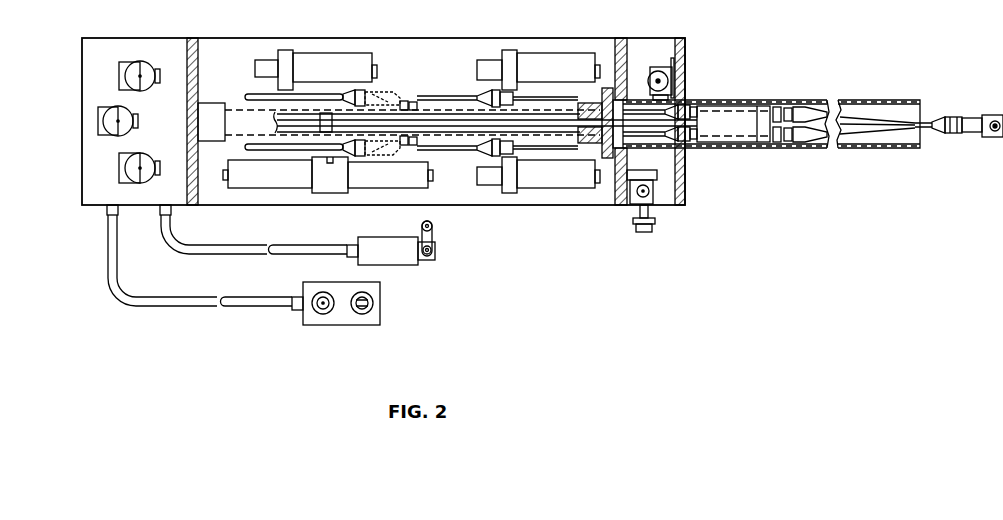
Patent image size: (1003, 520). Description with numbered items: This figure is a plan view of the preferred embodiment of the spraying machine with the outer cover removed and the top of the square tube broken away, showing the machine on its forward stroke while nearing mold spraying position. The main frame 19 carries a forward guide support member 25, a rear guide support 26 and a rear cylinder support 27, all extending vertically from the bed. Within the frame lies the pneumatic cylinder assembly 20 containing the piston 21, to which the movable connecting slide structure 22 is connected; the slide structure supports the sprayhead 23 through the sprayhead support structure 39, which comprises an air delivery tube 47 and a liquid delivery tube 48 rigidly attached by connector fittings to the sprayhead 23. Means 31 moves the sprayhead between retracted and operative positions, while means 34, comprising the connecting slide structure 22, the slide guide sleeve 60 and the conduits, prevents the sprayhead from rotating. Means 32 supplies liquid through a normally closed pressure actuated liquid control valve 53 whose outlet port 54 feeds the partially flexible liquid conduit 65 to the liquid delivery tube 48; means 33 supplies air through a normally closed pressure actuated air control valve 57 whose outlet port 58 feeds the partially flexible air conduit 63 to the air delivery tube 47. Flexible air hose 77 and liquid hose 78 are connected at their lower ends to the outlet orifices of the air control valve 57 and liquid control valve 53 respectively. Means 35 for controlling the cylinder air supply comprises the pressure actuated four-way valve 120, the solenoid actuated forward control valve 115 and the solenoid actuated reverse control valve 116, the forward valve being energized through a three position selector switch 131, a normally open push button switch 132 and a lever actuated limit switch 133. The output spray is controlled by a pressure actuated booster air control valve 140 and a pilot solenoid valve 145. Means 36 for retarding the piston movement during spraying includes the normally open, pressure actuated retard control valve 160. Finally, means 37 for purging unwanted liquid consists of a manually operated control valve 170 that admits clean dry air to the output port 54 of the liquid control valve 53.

The main frame 19 is at (433, 38).
The pneumatic cylinder assembly 20 is at (243, 107).
The piston 21 is at (320, 122).
The connecting slide structure 22 is at (775, 100).
The sprayhead 23 is at (991, 115).
The forward guide support member 25 is at (683, 43).
The rear guide support 26 is at (620, 42).
The rear cylinder support 27 is at (197, 41).
The means for moving the sprayhead 31 is at (186, 109).
The means for supplying liquid to the sprayhead 32 is at (512, 49).
The means for supplying air under pressure to the sprayhead 33 is at (508, 196).
The means for aligning the sprayhead 34 is at (780, 156).
The means for controlling the cylinder air supply 35 is at (295, 193).
The means for retarding the piston movement 36 is at (285, 49).
The means for purging the liquid conduit and spray nozzle 37 is at (629, 209).
The sprayhead support structure 39 is at (926, 119).
The air delivery tube 47 is at (860, 134).
The liquid delivery tube 48 is at (861, 118).
The liquid control valve 53 is at (541, 54).
The outlet port of liquid control valve 54 is at (514, 96).
The air control valve 57 is at (557, 190).
The outlet port of air control valve 58 is at (513, 155).
The slide guide sleeve 60 is at (718, 99).
The air conduit 63 is at (248, 147).
The liquid conduit 65 is at (250, 95).
The air hose 77 is at (437, 152).
The liquid hose 78 is at (431, 97).
The forward control valve 115 is at (122, 155).
The reverse control valve 116 is at (103, 110).
The four-way valve 120 is at (389, 190).
The selector switch 131 is at (375, 303).
The push button switch 132 is at (324, 314).
The limit switch 133 is at (436, 249).
The booster air control valve 140 is at (657, 72).
The pilot solenoid valve 145 is at (138, 61).
The retard control valve 160 is at (326, 52).
The manually operated control valve 170 is at (655, 185).